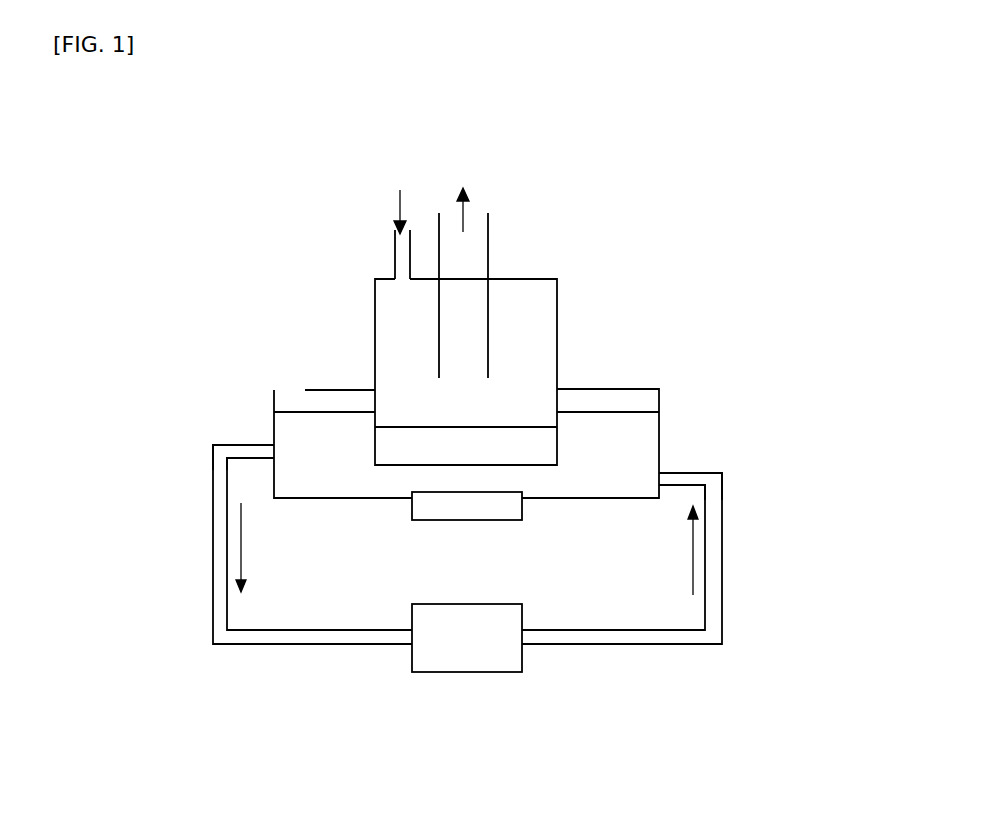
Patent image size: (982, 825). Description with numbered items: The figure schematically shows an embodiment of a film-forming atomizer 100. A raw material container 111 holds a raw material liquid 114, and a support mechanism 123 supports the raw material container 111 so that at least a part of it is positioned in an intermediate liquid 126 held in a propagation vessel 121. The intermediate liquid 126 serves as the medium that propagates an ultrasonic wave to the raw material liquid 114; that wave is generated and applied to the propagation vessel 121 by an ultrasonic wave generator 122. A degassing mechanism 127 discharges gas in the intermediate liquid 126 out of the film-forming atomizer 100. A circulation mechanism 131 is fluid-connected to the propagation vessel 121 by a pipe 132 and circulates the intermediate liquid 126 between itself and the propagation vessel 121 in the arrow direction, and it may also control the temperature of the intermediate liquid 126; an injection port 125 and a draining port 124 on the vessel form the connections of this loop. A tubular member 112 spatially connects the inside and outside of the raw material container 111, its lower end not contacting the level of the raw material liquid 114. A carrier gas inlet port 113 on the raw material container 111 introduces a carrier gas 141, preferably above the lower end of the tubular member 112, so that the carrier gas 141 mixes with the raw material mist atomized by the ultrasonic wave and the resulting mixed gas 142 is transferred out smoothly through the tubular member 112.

The film-forming atomizer 100 is at (117, 134).
The raw material container 111 is at (375, 297).
The tubular member 112 is at (483, 232).
The carrier gas inlet port 113 is at (397, 248).
The raw material liquid 114 is at (423, 435).
The propagation vessel 121 is at (662, 448).
The ultrasonic wave generator 122 is at (522, 510).
The support mechanism 123 is at (577, 387).
The bath outlet 124 is at (657, 482).
The bath inlet 125 is at (277, 450).
The intermediate liquid 126 is at (618, 430).
The degassing mechanism 127 is at (292, 392).
The circulation mechanism 131 is at (488, 653).
The pipe 132 is at (718, 567).
The carrier gas 141 is at (400, 193).
The mixed gas 142 is at (463, 192).